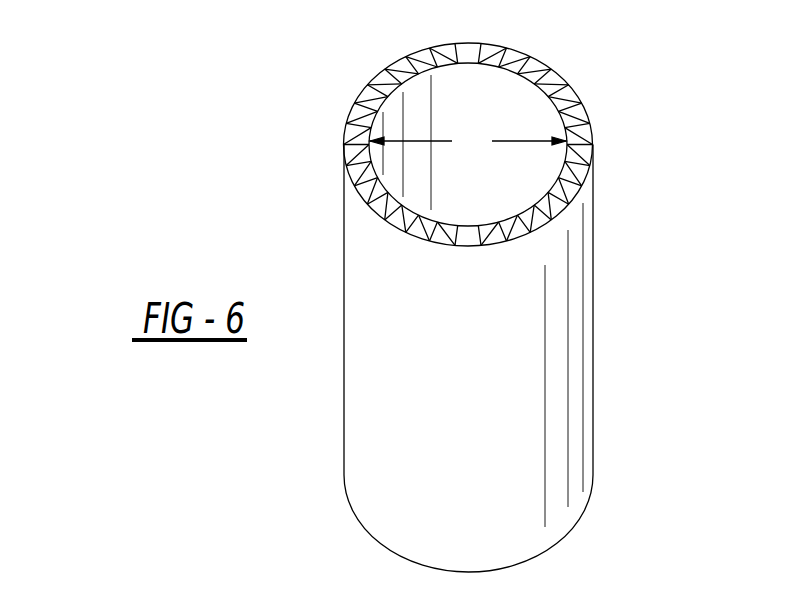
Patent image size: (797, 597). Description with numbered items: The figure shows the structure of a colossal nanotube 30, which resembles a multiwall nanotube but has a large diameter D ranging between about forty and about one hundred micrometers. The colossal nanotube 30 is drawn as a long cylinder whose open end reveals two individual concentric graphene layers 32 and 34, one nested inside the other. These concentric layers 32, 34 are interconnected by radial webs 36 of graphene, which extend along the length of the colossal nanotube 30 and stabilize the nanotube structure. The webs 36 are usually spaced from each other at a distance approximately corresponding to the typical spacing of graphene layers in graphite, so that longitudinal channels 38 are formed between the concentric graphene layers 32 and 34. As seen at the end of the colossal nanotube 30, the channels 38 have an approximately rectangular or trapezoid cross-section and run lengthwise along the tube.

The colossal nanotube 30 is at (464, 307).
The concentric layer 32 is at (543, 106).
The concentric layer 34 is at (587, 112).
The radial web 36 is at (577, 144).
The longitudinal channel 38 is at (462, 233).